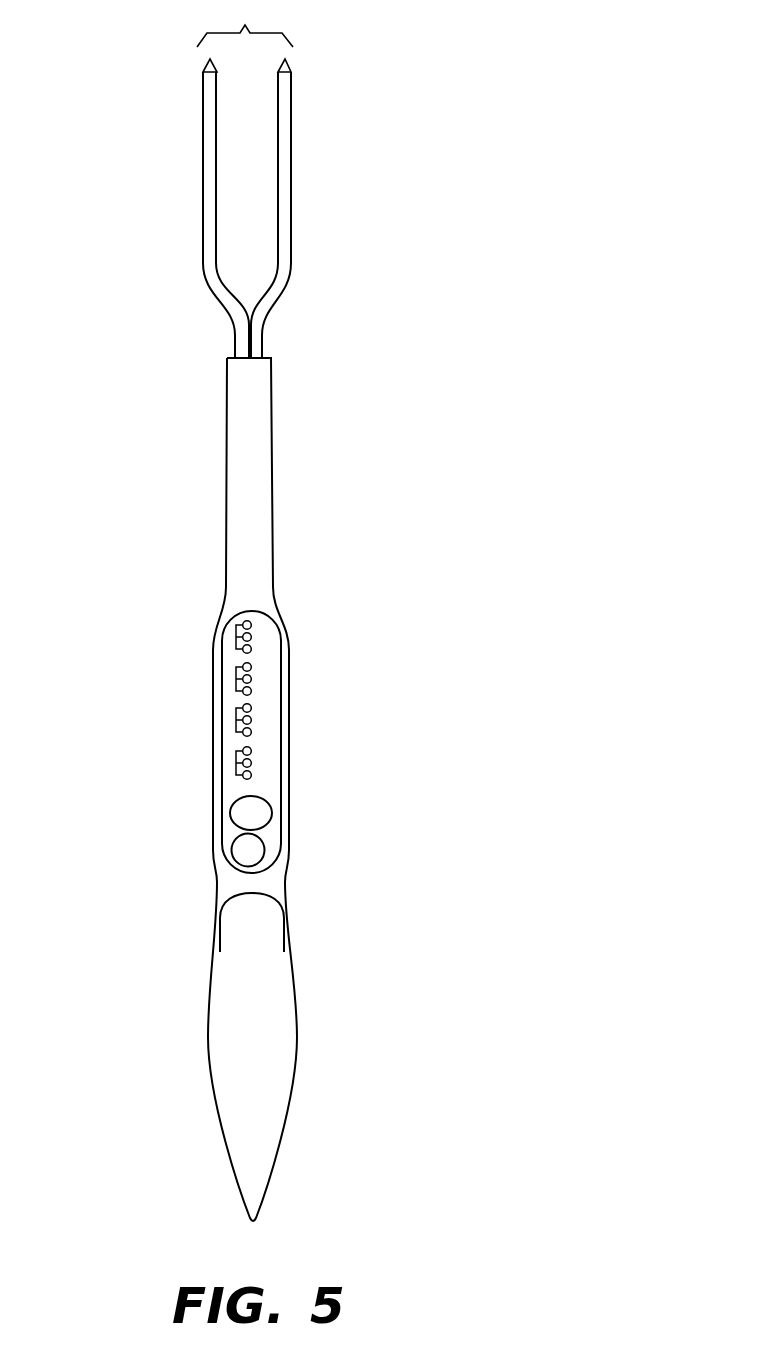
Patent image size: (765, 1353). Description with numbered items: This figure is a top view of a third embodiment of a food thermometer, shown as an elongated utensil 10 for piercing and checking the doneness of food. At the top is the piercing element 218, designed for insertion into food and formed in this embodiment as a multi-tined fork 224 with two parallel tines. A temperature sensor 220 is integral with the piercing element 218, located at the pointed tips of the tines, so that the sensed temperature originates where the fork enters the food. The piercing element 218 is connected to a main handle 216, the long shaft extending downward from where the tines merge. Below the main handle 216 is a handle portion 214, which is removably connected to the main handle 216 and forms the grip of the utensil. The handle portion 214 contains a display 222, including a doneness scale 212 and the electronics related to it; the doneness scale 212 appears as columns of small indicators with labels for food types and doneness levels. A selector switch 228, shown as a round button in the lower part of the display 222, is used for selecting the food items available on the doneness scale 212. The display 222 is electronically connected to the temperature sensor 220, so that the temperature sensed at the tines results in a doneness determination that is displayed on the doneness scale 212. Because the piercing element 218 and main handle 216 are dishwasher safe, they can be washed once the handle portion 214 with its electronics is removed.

The cooking fork thermometer device 10 is at (314, 610).
The doneness scale 212 is at (252, 721).
The handle portion 214 is at (264, 833).
The main handle 216 is at (263, 532).
The piercing element 218 is at (288, 218).
The temperature sensor 220 is at (206, 68).
The display 222 is at (264, 785).
The multi-tined fork 224 is at (245, 23).
The selector switch 228 is at (266, 850).